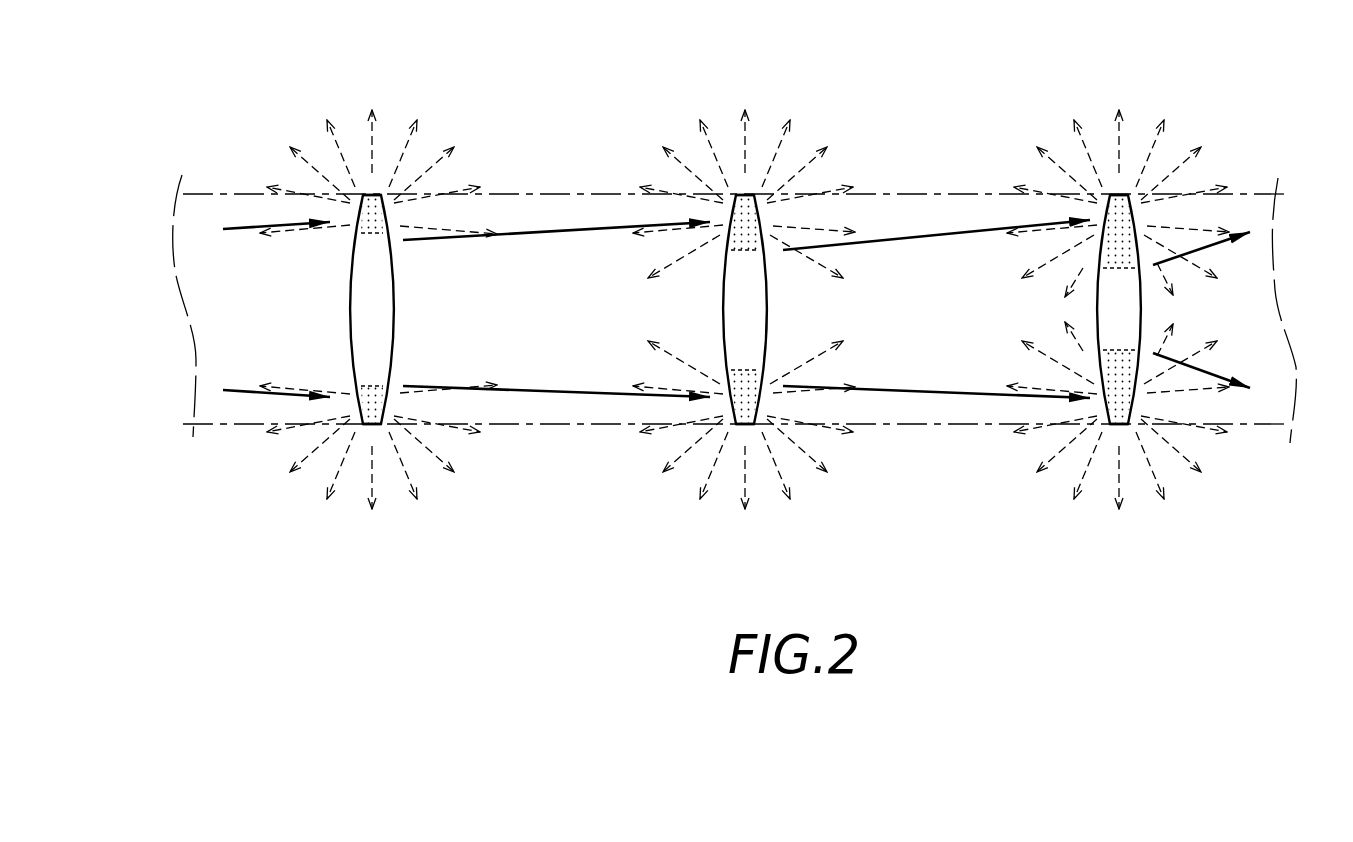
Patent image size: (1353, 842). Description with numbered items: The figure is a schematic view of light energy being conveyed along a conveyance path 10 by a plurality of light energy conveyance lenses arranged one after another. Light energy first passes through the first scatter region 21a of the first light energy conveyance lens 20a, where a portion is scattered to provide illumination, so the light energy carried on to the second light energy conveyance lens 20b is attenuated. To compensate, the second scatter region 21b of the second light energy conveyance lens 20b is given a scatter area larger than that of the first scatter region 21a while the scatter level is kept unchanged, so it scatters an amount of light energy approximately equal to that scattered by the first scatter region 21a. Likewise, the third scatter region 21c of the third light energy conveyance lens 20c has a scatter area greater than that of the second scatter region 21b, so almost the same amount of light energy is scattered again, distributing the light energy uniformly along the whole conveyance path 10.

The conveyance path 10 is at (552, 203).
The first light energy conveyance lens 20a is at (394, 308).
The second light energy conveyance lens 20b is at (768, 308).
The third light energy conveyance lens 20c is at (1141, 308).
The first scatter region 21a is at (378, 195).
The second scatter region 21b is at (750, 195).
The third scatter region 21c is at (1122, 195).